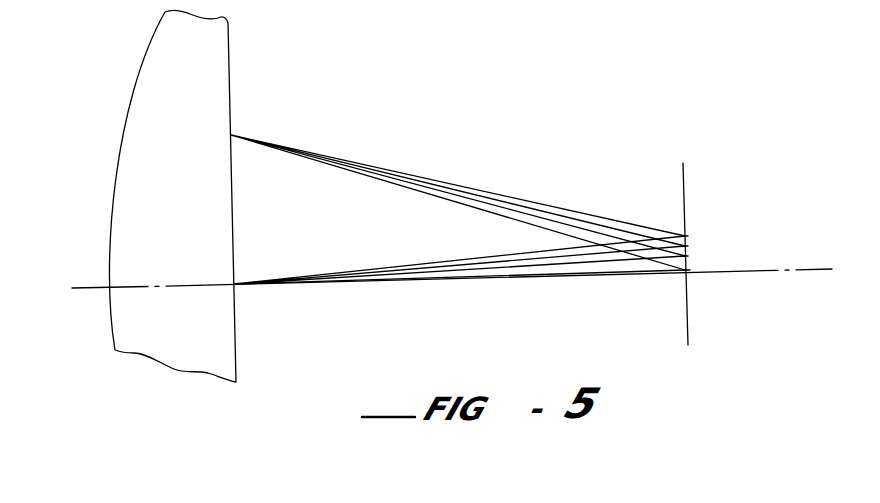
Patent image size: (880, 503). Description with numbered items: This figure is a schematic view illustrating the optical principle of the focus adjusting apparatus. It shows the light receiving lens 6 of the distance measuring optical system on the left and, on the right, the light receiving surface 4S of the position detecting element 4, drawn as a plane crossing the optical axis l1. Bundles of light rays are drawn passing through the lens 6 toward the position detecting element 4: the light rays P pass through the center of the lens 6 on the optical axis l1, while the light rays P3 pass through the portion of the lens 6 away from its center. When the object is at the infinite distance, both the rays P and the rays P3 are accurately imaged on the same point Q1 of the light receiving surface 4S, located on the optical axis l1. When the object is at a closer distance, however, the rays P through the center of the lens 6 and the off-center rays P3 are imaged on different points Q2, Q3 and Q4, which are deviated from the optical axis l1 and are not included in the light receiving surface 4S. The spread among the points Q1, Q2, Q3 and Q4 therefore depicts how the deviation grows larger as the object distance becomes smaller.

The light receiving lens 6 is at (223, 79).
The light receiving surface 4S is at (732, 254).
The position detecting element 4 is at (687, 185).
The axial ray bundle P is at (562, 277).
The light rays off the lens center P3 is at (601, 225).
The image point on optical axis Q1 is at (687, 275).
The deviated image point Q2 is at (685, 256).
The deviated image point Q3 is at (685, 246).
The deviated image point Q4 is at (685, 236).
The optical axis l1 is at (452, 298).